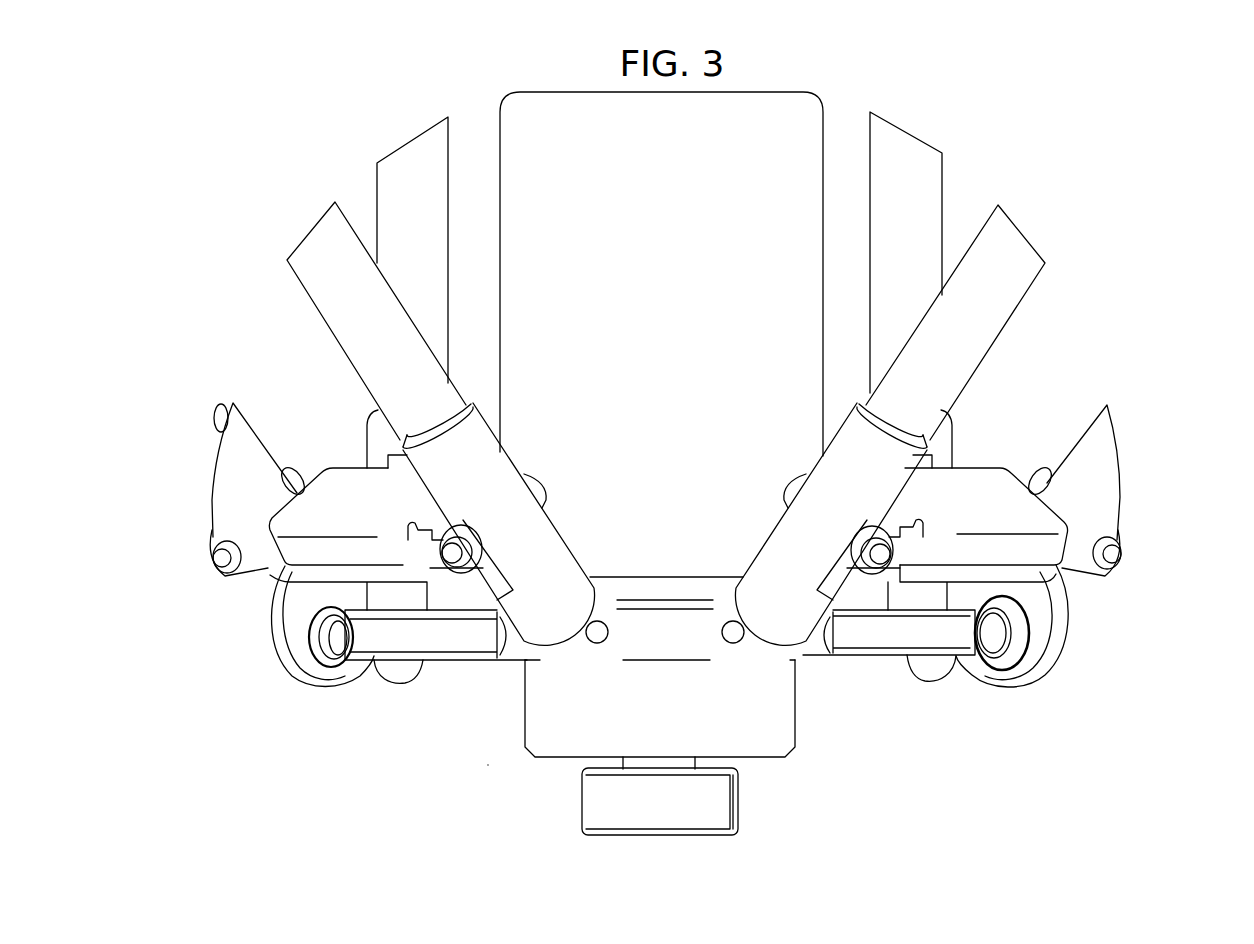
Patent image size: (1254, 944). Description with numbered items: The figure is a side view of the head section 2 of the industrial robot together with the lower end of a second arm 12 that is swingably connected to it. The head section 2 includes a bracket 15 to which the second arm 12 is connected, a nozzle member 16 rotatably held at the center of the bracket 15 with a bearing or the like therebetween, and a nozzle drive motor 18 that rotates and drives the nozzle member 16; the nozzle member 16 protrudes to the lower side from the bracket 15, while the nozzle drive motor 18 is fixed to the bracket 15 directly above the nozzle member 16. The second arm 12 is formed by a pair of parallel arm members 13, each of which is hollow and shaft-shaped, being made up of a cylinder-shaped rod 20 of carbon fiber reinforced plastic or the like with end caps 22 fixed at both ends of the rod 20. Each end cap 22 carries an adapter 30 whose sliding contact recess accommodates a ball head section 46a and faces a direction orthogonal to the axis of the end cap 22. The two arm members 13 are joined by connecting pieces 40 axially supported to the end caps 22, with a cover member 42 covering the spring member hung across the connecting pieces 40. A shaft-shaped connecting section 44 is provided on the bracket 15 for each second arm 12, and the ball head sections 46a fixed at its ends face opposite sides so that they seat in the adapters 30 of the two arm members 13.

The head section 2 is at (488, 765).
The second arm 12 is at (142, 268).
The arm member 13 is at (177, 249).
The bracket 15 is at (662, 643).
The nozzle member 16 is at (716, 798).
The nozzle drive motor 18 is at (783, 92).
The rod 20 is at (357, 317).
The end cap 22 is at (432, 426).
The adapter 30 is at (317, 668).
The connecting piece 40 is at (245, 520).
The cover member 42 is at (317, 553).
The connecting section 44 is at (420, 637).
The ball head section 46a is at (329, 646).